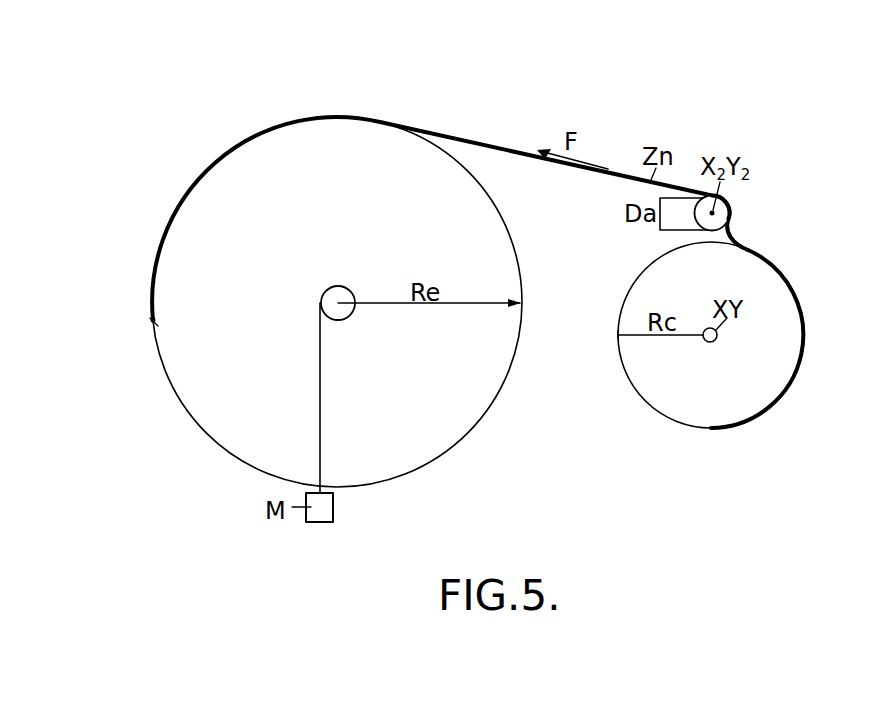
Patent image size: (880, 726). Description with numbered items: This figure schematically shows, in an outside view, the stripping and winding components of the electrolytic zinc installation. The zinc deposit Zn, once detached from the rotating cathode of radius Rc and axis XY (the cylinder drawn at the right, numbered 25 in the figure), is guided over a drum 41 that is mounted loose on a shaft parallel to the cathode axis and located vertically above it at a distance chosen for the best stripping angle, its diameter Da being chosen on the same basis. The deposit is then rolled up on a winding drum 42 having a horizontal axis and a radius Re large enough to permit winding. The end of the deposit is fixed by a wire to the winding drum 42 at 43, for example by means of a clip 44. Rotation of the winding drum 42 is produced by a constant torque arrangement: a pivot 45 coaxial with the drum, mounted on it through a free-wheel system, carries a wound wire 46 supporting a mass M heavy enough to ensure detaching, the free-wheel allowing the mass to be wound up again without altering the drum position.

The cylinder 25 is at (632, 373).
The drum 41 is at (728, 213).
The winding drum 42 is at (496, 375).
The fixing point on drum 43 is at (155, 322).
The clip 44 is at (151, 320).
The pivot 45 is at (324, 293).
The wire 46 is at (328, 389).